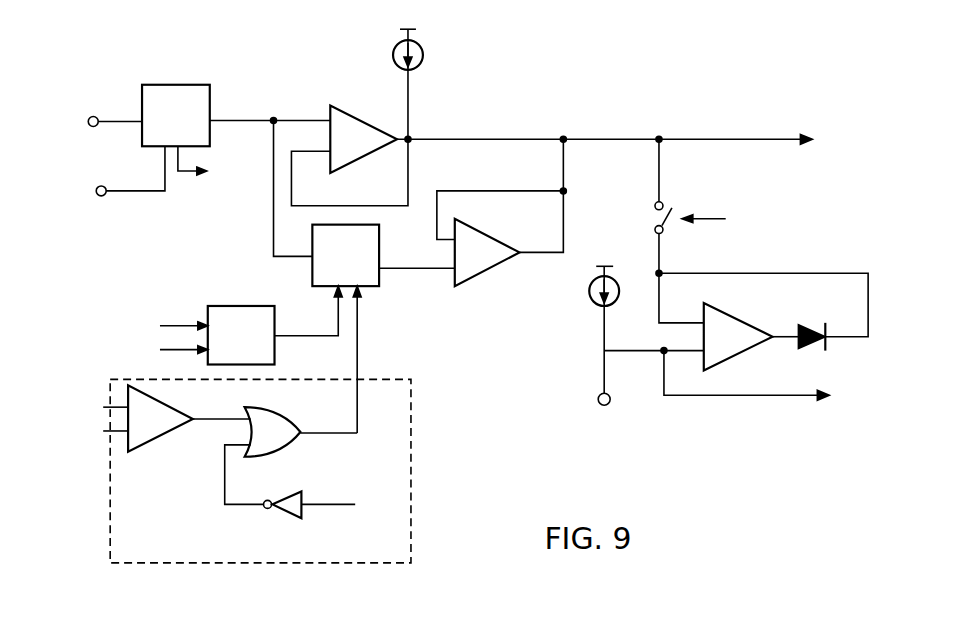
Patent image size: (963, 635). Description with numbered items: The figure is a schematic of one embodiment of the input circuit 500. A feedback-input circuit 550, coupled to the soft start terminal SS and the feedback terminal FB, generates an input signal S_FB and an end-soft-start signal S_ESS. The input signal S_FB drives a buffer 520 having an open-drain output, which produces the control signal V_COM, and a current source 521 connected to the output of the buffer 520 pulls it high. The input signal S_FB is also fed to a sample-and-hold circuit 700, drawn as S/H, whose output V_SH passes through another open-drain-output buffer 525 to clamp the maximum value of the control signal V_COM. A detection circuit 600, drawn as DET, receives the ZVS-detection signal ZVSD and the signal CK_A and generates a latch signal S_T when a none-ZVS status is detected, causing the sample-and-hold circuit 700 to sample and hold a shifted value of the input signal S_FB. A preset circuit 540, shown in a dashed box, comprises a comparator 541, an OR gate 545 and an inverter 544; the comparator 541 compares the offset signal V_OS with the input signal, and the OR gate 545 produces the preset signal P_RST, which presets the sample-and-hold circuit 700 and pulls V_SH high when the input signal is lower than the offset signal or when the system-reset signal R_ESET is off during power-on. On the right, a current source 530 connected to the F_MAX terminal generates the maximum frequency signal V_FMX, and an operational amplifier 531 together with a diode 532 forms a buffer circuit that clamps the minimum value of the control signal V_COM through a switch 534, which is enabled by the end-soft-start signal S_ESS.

The input circuit 500 is at (811, 41).
The feedback-input circuit 550 is at (170, 80).
The buffer 520 is at (360, 109).
The current source 521 is at (423, 52).
The sample-and-hold circuit 700 is at (378, 250).
The open-drain-output buffer 525 is at (480, 279).
The detection circuit 600 is at (218, 297).
The preset circuit 540 is at (418, 472).
The comparator 541 is at (148, 440).
The OR gate 545 is at (285, 452).
The inverter 544 is at (305, 512).
The switch 534 is at (648, 212).
The current source 530 is at (582, 300).
The operational amplifier 531 is at (733, 310).
The diode 532 is at (812, 345).